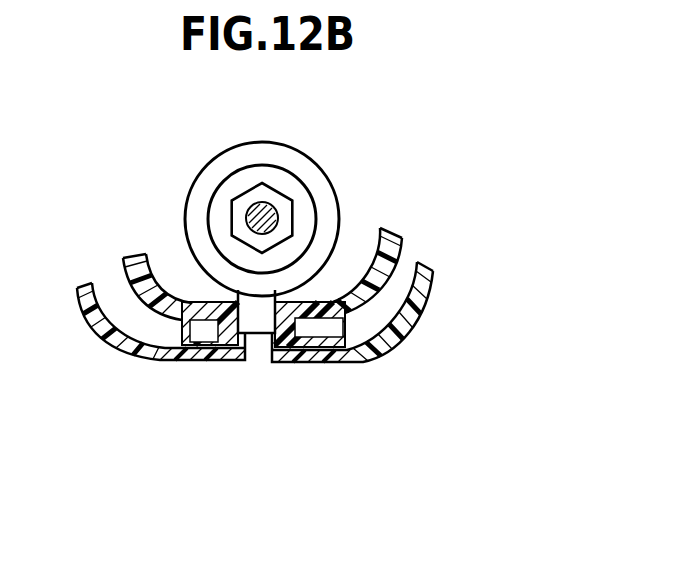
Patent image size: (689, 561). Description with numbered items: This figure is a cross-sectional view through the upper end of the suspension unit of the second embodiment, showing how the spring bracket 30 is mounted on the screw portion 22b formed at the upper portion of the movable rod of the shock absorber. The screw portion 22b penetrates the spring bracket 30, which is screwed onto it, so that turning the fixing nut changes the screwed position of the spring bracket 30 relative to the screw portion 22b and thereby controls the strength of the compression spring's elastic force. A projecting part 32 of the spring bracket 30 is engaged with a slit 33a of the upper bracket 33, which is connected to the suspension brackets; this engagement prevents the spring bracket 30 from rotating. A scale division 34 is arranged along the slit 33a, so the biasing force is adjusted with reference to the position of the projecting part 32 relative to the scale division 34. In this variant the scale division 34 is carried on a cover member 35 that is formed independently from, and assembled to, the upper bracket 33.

The spring bracket 30 is at (291, 157).
The screw portion 22b is at (278, 215).
The upper bracket 33 is at (400, 253).
The cover member 35 is at (419, 326).
The scale division 34 is at (211, 372).
The projecting part 32 is at (253, 323).
The slit 33a is at (262, 333).